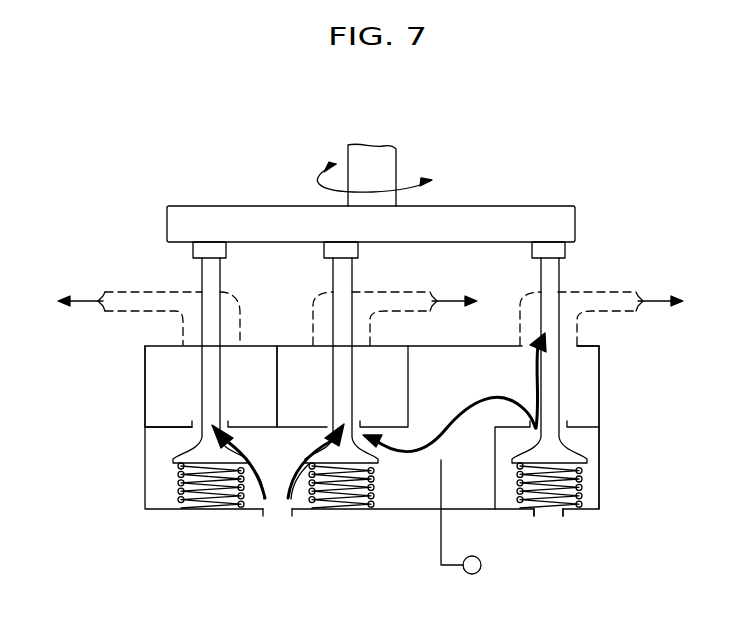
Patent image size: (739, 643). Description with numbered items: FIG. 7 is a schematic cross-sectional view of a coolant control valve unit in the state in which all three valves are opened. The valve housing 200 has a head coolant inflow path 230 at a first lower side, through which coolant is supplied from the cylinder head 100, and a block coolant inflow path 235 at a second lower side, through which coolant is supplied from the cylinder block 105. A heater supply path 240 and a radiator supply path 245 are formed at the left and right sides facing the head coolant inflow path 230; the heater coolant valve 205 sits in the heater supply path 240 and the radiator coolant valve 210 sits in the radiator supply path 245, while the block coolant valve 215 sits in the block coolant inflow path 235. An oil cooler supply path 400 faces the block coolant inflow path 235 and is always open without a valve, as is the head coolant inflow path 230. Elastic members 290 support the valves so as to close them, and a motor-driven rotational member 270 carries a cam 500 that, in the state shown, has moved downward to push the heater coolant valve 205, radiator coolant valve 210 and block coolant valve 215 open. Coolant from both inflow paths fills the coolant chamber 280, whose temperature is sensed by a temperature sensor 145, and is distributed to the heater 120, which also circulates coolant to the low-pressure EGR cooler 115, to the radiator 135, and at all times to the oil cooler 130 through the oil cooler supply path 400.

The cylinder head 100 is at (275, 520).
The cylinder block 105 is at (549, 520).
The low-pressure EGR cooler 115 is at (38, 273).
The heater 120 is at (131, 316).
The oil cooler 130 is at (619, 316).
The radiator 135 is at (412, 316).
The temperature sensor 145 is at (475, 574).
The valve housing 200 is at (601, 373).
The heater coolant valve 205 is at (208, 277).
The radiator coolant valve 210 is at (337, 277).
The block coolant valve 215 is at (552, 276).
The head coolant inflow path 230 is at (283, 513).
The block coolant inflow path 235 is at (562, 418).
The heater supply path 240 is at (197, 424).
The radiator supply path 245 is at (326, 420).
The rotational member 270 is at (578, 226).
The coolant chamber 280 is at (423, 492).
The elastic member 290 is at (180, 512).
The oil cooler supply path 400 is at (577, 346).
The cam 500 is at (210, 250).